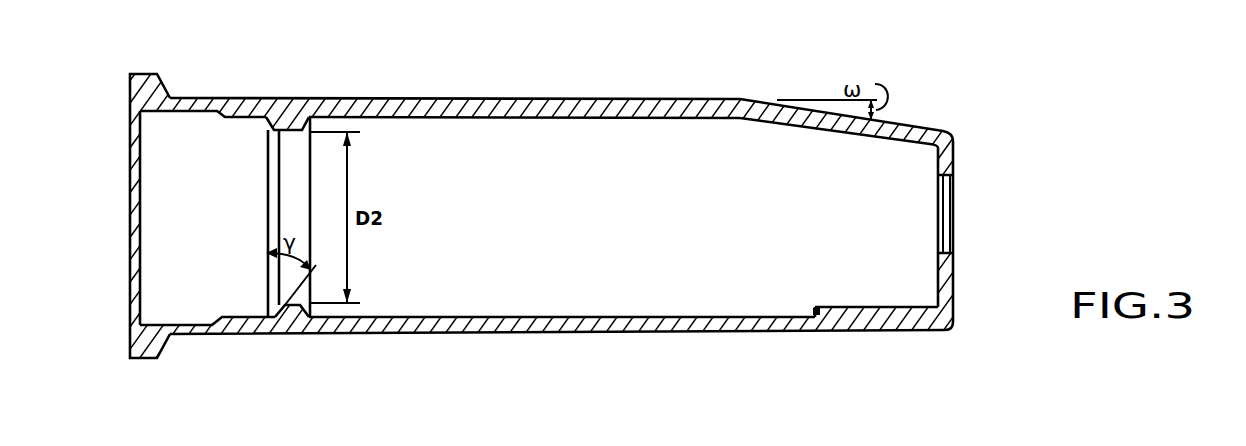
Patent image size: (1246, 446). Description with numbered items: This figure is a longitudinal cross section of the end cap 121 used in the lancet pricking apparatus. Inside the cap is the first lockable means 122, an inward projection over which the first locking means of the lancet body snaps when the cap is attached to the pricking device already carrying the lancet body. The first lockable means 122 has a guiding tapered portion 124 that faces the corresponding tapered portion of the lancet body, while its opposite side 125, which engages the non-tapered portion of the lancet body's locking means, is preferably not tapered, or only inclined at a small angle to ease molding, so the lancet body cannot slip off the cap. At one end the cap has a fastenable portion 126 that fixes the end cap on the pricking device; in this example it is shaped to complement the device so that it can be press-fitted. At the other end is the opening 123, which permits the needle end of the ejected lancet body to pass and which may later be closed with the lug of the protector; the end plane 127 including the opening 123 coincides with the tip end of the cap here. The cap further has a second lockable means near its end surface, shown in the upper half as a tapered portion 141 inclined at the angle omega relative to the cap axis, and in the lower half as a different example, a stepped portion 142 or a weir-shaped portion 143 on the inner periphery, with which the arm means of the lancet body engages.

The end cap 121 is at (377, 99).
The first lockable means 122 is at (293, 118).
The opening 123 is at (950, 234).
The tapered portion 124 is at (280, 333).
The side 125 is at (305, 333).
The fastenable portion 126 is at (183, 333).
The end plane 127 is at (955, 153).
The tapered wall portion 141 is at (889, 128).
The stepped portion 142 is at (887, 308).
The weir-shaped portion 143 is at (818, 318).